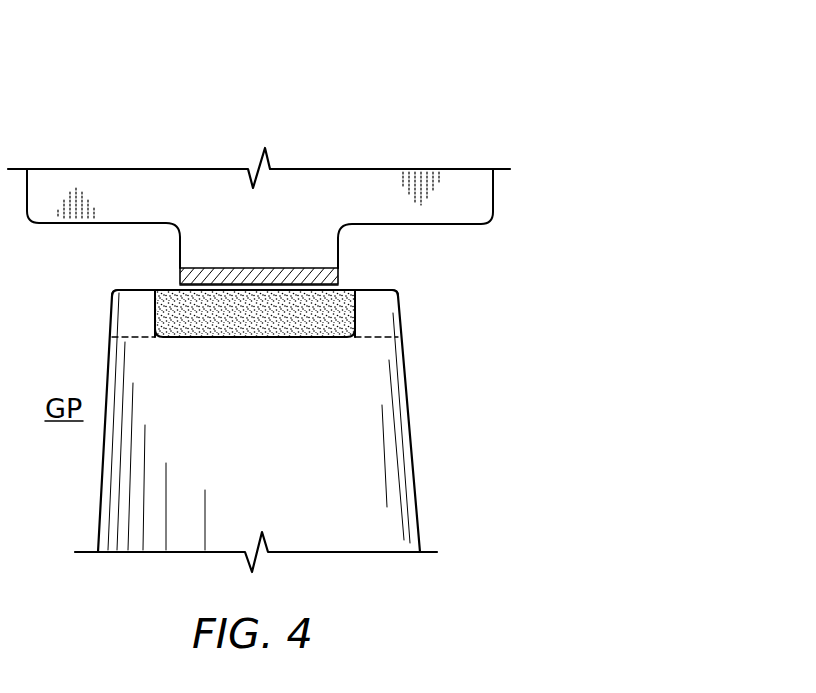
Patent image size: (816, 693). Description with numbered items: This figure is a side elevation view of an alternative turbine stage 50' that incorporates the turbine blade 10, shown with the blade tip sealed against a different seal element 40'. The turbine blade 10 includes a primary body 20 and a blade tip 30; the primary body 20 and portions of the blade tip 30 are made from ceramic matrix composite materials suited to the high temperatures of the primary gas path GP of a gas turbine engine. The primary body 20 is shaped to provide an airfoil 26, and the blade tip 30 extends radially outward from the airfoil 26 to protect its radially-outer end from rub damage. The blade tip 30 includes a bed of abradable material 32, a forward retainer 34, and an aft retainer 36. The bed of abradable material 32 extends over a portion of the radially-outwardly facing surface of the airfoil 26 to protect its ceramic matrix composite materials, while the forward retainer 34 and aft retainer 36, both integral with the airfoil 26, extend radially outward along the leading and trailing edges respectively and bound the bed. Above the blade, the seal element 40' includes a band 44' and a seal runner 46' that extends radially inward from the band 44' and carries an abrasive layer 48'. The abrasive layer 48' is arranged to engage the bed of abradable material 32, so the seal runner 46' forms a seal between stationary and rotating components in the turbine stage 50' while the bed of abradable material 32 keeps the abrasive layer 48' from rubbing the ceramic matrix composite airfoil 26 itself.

The alternative turbine stage 50' is at (321, 148).
The seal element 40' is at (312, 163).
The band 44' is at (306, 218).
The seal runner 46' is at (390, 246).
The abrasive layer 48' is at (329, 264).
The aft retainer 36 is at (391, 280).
The blade tip 30 is at (402, 305).
The turbine blade 10 is at (315, 400).
The airfoil 26 is at (398, 481).
The primary body 20 is at (429, 505).
The forward retainer 34 is at (119, 285).
The bed of abradable material 32 is at (170, 284).